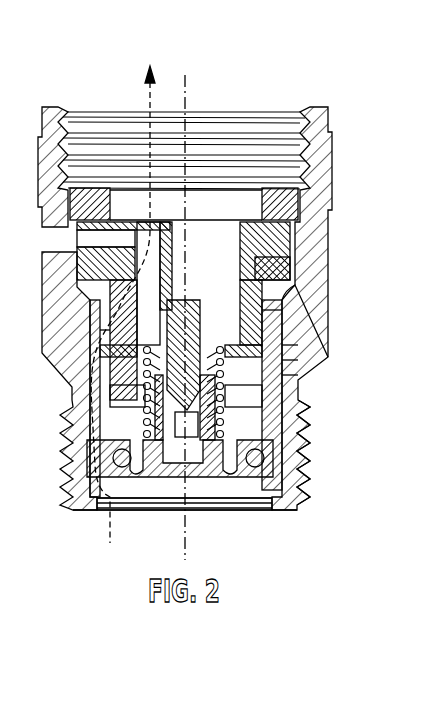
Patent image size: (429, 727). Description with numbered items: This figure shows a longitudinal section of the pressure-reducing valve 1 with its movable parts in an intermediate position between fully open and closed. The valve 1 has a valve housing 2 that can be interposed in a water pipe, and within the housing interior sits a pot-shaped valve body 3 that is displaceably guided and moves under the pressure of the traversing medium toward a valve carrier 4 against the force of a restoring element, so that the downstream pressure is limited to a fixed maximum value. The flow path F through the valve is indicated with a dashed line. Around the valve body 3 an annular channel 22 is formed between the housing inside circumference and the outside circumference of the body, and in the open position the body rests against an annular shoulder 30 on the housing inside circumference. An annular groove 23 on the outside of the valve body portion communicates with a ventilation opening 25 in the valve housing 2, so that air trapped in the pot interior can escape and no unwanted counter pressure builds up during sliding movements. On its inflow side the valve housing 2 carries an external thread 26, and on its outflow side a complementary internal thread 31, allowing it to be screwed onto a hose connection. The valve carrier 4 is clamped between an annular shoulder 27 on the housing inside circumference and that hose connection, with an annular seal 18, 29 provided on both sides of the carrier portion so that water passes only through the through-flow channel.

The pressure-reducing valve 1 is at (248, 50).
The valve housing 2 is at (53, 157).
The valve body 3 is at (272, 340).
The valve carrier 4 is at (110, 307).
The annular seal 18 is at (295, 265).
The annular channel 22 is at (77, 407).
The annular groove 23 is at (298, 240).
The ventilation opening 25 is at (43, 240).
The external thread 26 is at (312, 437).
The annular shoulder 27 is at (305, 303).
The annular seal 29 is at (300, 203).
The annular shoulder 30 is at (100, 490).
The internal thread 31 is at (73, 137).
The flow path F is at (108, 527).